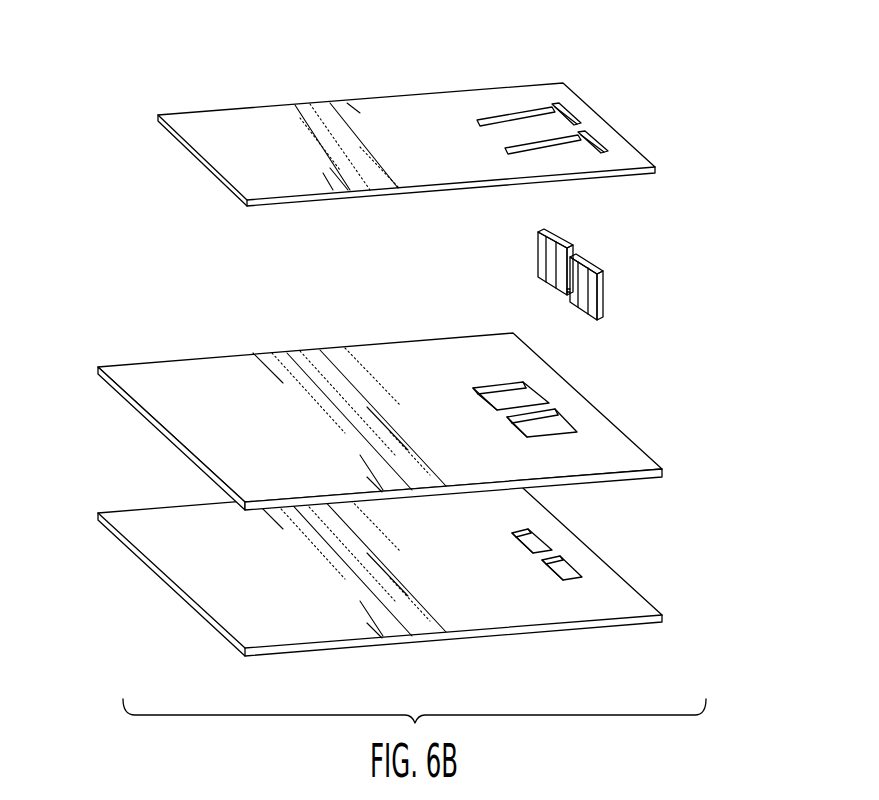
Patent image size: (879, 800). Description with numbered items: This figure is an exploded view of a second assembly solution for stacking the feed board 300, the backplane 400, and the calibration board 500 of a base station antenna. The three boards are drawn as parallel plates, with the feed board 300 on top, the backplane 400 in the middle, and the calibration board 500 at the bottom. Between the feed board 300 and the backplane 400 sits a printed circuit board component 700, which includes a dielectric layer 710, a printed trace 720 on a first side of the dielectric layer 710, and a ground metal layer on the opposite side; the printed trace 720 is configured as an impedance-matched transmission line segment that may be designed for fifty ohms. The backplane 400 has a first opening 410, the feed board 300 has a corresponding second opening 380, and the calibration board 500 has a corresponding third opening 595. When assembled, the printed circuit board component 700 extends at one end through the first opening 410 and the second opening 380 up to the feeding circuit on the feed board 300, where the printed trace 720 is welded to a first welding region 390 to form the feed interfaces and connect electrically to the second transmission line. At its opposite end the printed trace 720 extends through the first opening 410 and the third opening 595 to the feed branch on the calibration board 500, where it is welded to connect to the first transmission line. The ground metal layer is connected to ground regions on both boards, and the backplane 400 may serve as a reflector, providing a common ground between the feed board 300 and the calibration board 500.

The feed board 300 is at (213, 145).
The second opening 380 is at (590, 136).
The first welding region 390 is at (611, 81).
The backplane 400 is at (168, 409).
The first opening 410 is at (568, 418).
The calibration board 500 is at (182, 557).
The third opening 595 is at (572, 552).
The printed circuit board component 700 is at (575, 268).
The dielectric layer 710 is at (540, 250).
The printed trace 720 is at (568, 289).